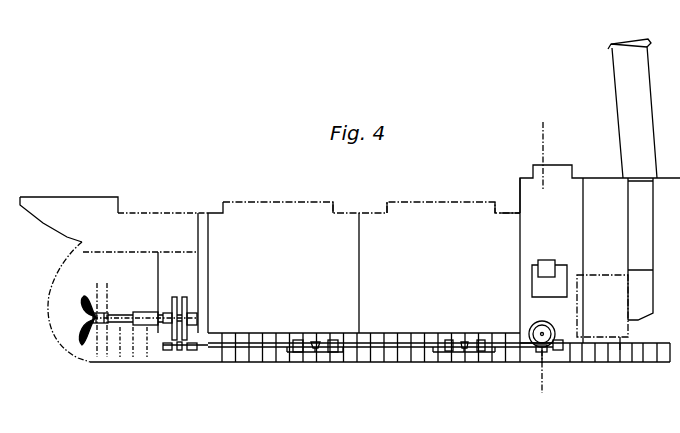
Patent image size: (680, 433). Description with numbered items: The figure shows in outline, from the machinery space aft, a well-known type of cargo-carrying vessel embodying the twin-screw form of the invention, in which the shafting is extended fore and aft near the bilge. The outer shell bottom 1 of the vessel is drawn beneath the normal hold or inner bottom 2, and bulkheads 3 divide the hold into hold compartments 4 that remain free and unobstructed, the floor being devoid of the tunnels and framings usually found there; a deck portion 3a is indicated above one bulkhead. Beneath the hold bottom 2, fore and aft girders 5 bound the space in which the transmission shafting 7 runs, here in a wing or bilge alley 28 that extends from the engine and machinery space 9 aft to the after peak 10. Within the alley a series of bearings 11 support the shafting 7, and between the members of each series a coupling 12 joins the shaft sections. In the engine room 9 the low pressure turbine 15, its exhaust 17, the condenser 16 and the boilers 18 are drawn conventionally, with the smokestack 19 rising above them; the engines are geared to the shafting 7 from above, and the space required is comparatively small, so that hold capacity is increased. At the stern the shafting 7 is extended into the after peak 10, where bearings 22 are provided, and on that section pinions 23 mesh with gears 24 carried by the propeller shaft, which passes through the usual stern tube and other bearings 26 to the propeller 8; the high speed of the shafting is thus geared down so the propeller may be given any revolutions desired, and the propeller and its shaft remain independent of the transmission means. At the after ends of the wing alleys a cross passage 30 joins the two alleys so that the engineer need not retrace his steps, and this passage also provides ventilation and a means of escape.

The outer shell bottom 1 is at (365, 360).
The hold bottom 2 is at (420, 337).
The bulkheads 3 is at (210, 243).
The deck 3a is at (197, 233).
The hold compartments 4 is at (371, 256).
The fore and aft girders 5 is at (546, 257).
The shafting 7 is at (252, 343).
The propeller 8 is at (82, 332).
The engine and machinery space 9 is at (590, 254).
The after peak 10 is at (166, 263).
The bearings 11 is at (332, 340).
The coupling 12 is at (315, 353).
The low pressure turbine 15 is at (540, 347).
The condenser 16 is at (562, 276).
The exhaust 17 is at (541, 261).
The boilers 18 is at (595, 295).
The smokestack 19 is at (643, 113).
The bearings 22 is at (165, 352).
The pinions 23 is at (181, 353).
The gears 24 is at (183, 310).
The stern tube bearings 26 is at (139, 312).
The wing alleys 28 is at (400, 353).
The cross passage 30 is at (202, 277).